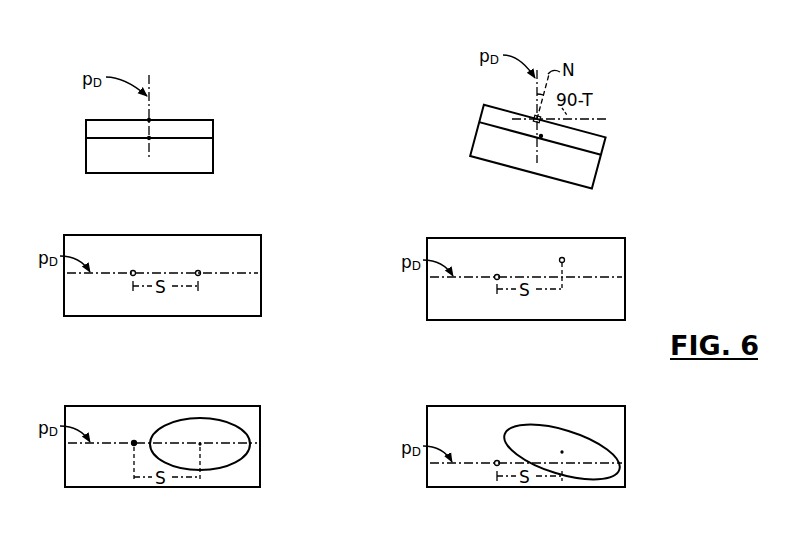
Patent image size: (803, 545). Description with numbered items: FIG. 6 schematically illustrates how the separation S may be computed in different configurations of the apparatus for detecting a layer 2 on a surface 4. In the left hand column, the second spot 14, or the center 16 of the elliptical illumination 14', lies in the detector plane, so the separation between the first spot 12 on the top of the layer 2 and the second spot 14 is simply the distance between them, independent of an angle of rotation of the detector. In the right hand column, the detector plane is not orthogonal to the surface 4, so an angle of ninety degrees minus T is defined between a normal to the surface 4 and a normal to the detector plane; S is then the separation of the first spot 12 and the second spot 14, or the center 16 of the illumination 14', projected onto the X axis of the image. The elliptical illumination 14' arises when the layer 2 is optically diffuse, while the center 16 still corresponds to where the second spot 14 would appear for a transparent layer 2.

The layer 2 is at (118, 122).
The surface 4 is at (201, 133).
The first spot 12 is at (149, 120).
The second spot 14 is at (380, 212).
The elliptical illumination 14' is at (370, 433).
The center of illumination 16 is at (200, 443).